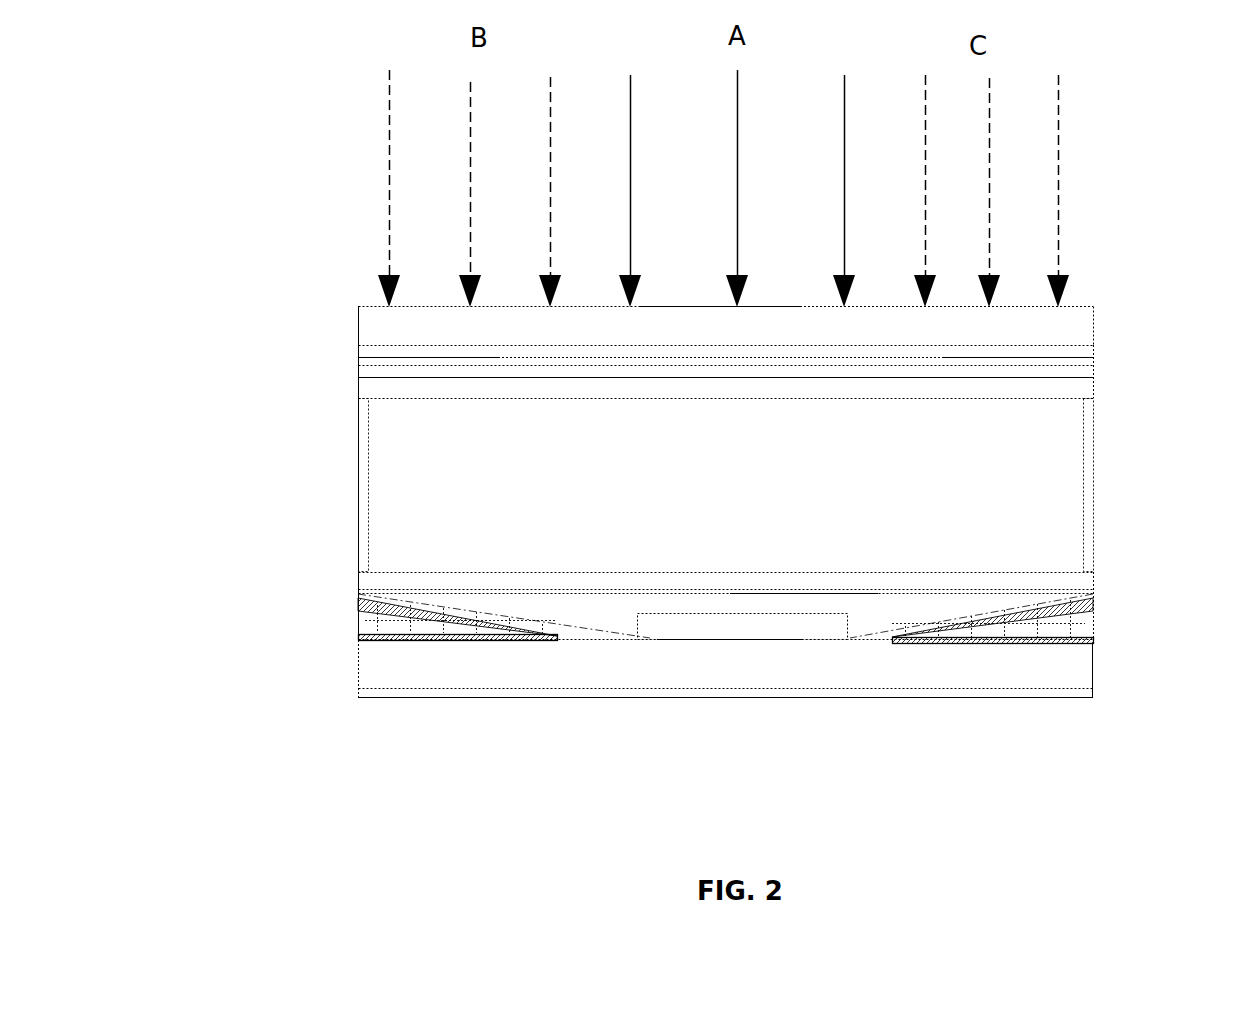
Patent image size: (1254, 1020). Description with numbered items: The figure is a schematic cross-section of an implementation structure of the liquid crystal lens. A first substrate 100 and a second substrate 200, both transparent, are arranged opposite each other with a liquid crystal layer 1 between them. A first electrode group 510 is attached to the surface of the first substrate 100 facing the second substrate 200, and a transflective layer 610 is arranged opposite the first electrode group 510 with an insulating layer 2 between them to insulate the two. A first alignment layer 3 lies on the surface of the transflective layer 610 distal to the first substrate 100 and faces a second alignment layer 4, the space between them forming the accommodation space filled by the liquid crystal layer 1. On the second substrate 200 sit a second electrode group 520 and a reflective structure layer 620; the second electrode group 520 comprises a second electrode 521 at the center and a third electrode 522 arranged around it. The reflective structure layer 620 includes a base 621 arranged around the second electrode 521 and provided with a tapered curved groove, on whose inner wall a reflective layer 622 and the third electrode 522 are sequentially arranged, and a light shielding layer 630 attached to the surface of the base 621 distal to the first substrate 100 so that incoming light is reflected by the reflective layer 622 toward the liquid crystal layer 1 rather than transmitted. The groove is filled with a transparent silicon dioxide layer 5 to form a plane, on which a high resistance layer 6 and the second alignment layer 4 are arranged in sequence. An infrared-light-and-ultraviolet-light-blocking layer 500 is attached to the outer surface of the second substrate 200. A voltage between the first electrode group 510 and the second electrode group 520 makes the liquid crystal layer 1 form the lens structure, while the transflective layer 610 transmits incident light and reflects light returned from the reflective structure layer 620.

The first substrate 100 is at (371, 322).
The first electrode group 510 is at (360, 352).
The insulating layer 2 is at (357, 364).
The transflective layer 610 is at (362, 377).
The first alignment layer 3 is at (363, 398).
The liquid crystal layer 1 is at (1050, 462).
The second alignment layer 4 is at (355, 578).
The high resistance layer 6 is at (355, 594).
The transparent silicon dioxide layer 5 is at (600, 618).
The second electrode group 520 is at (806, 727).
The second electrode 521 is at (755, 635).
The third electrode 522 is at (1040, 606).
The reflective structure layer 620 is at (639, 686).
The base 621 is at (376, 621).
The reflective layer 622 is at (356, 608).
The light shielding layer 630 is at (376, 640).
The second substrate 200 is at (1058, 673).
The infrared-light-and-ultraviolet-light-blocking layer 500 is at (388, 695).